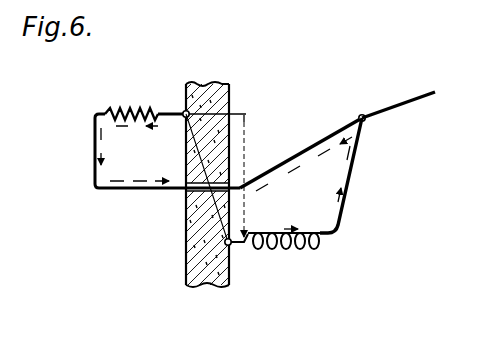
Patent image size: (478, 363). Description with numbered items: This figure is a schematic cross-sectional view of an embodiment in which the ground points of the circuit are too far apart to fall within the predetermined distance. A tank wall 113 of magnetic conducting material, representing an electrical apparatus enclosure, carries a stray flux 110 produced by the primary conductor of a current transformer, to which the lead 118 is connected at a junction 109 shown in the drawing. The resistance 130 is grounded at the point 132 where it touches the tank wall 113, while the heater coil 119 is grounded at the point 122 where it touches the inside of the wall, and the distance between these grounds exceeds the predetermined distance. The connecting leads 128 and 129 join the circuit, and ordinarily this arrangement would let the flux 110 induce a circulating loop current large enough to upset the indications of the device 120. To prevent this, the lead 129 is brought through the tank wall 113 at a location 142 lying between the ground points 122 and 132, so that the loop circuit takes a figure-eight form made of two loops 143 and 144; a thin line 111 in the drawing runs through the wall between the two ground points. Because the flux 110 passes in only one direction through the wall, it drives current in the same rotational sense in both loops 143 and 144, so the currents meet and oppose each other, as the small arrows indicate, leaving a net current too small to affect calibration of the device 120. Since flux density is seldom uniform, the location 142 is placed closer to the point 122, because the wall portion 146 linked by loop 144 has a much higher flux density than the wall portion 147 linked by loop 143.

The pivot 109 is at (364, 115).
The stray flux 110 is at (210, 285).
The lever 111 is at (198, 150).
The tank wall 113 is at (210, 84).
The lead 118 is at (392, 108).
The heater coil 119 is at (290, 249).
The device 120 is at (172, 225).
The ground point for heater coil 122 is at (232, 247).
The connecting lead 128 is at (344, 197).
The connecting lead 129 is at (284, 163).
The resistance 130 is at (118, 108).
The ground point for resistance 132 is at (184, 112).
The location where lead passes through tank wall 142 is at (186, 192).
The loop 143 is at (138, 151).
The loop 144 is at (322, 197).
The tank wall portion 146 is at (240, 222).
The tank wall portion 147 is at (196, 169).